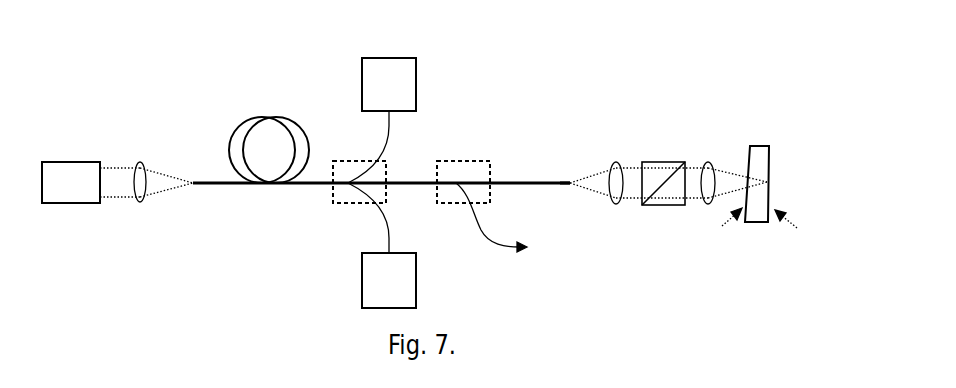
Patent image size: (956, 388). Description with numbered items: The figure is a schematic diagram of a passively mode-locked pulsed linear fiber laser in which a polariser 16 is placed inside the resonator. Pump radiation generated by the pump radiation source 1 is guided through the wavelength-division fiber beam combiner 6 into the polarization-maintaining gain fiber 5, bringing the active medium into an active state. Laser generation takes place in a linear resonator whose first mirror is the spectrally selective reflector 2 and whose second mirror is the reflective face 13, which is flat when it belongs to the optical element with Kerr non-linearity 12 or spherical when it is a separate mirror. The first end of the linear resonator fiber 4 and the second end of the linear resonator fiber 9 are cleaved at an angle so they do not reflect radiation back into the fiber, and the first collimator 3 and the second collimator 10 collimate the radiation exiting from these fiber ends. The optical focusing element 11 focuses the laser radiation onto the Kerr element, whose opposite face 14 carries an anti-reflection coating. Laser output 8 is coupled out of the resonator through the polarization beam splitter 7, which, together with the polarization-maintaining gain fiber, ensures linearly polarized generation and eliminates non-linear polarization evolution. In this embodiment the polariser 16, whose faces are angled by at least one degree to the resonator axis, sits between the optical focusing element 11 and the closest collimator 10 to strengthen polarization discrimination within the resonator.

The pump radiation source 1 is at (389, 183).
The spectrally selective reflector 2 is at (71, 182).
The first collimator 3 is at (146, 164).
The first end of the linear resonator fiber 4 is at (377, 165).
The polarization-maintaining gain fiber 5 is at (269, 150).
The wavelength-division fiber beam combiner 6 is at (361, 182).
The polarization beam splitter 7 is at (463, 166).
The output fiber 8 is at (492, 217).
The second end of the linear resonator fiber 9 is at (587, 173).
The second collimator 10 is at (655, 164).
The optical focusing element 11 is at (731, 164).
The optical element with Kerr non-linearity 12 is at (760, 160).
The resonator mirror 13 is at (796, 235).
The second face of the optical element with Kerr non-linearity 14 is at (722, 234).
The polariser 16 is at (663, 165).